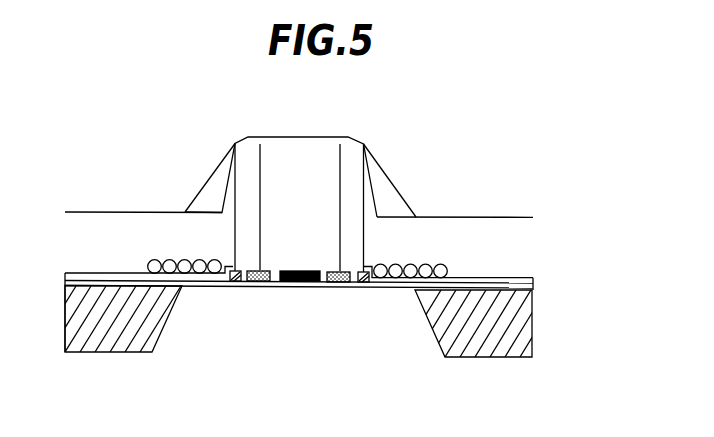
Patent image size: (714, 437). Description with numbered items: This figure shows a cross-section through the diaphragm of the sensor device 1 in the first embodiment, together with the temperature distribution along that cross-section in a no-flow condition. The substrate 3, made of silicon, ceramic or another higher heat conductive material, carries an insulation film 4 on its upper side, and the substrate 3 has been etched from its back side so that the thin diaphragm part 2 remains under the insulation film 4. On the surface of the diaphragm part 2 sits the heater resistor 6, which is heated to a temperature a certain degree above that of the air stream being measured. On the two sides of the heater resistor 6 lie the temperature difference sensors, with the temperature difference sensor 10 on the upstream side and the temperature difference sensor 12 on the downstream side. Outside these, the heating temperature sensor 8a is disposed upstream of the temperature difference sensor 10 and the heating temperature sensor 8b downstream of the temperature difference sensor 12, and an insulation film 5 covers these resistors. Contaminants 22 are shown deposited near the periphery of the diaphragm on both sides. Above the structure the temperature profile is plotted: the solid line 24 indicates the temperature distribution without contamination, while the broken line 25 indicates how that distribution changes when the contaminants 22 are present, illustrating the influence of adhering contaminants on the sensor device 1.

The sensor device 1 is at (88, 272).
The diaphragm part 2 is at (396, 352).
The substrate 3 is at (528, 328).
The insulation film 4 is at (535, 291).
The insulation film 5 is at (535, 276).
The heater resistor 6 is at (300, 283).
The heating temperature sensor 8a is at (233, 283).
The heating temperature sensor 8b is at (365, 284).
The temperature difference sensor 10 is at (258, 283).
The temperature difference sensor 12 is at (338, 284).
The contaminants 22 is at (178, 260).
The solid line 24 is at (198, 193).
The broken line 25 is at (228, 176).